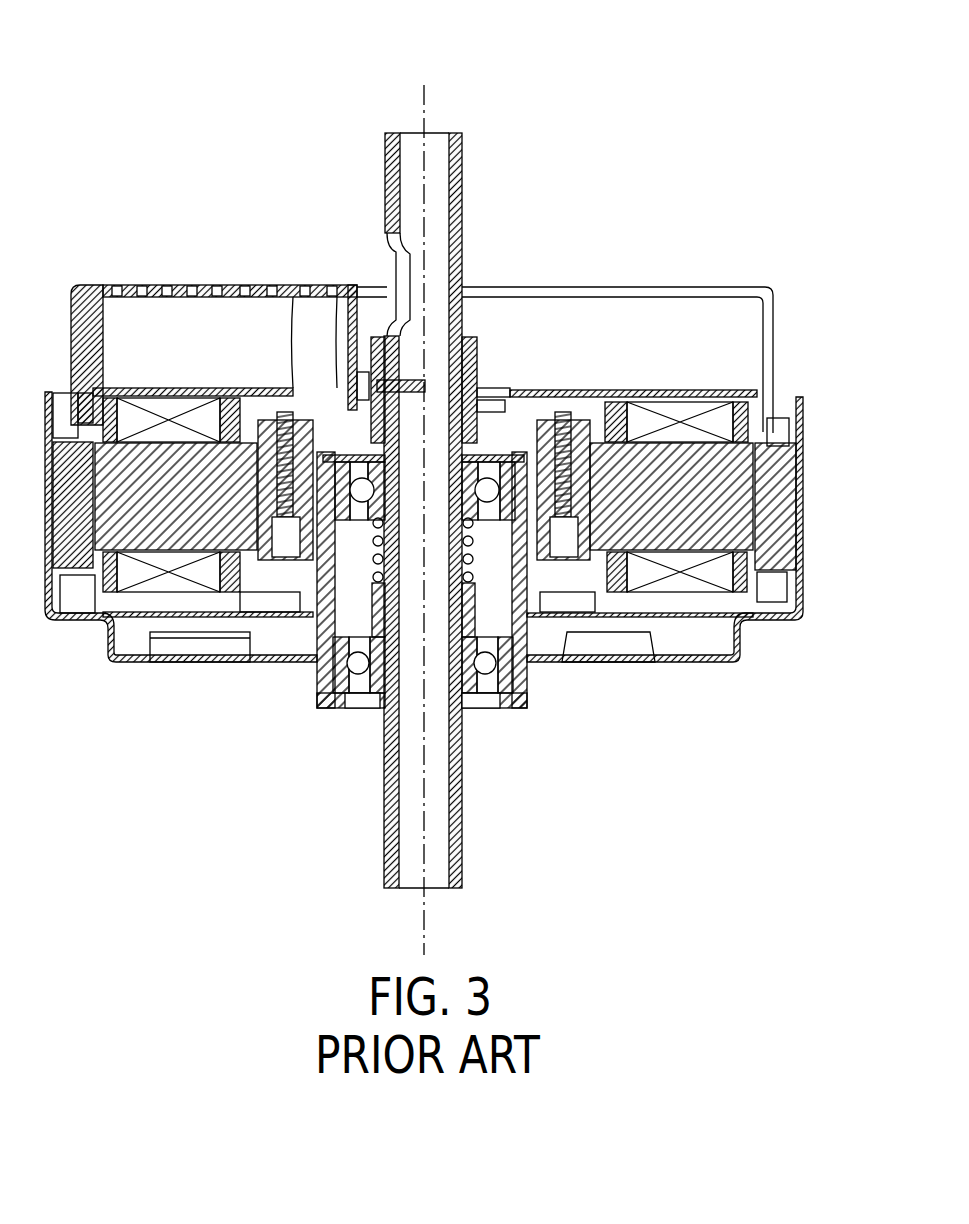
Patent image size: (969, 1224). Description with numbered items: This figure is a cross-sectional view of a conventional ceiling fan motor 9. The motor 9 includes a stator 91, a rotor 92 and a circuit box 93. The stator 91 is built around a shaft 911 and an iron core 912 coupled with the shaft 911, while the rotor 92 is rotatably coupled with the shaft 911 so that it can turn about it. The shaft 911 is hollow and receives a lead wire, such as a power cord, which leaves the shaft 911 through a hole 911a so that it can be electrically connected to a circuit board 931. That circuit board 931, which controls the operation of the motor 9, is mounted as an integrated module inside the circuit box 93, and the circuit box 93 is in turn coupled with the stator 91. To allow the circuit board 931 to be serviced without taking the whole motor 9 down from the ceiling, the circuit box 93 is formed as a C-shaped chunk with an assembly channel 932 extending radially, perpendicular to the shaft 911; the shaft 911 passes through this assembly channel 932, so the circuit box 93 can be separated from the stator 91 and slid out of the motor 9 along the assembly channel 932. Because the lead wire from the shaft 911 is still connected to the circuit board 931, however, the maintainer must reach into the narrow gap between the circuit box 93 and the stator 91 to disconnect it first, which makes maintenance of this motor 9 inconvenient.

The ceiling fan motor 9 is at (566, 85).
The stator 91 is at (642, 772).
The shaft 911 is at (460, 758).
The hole 911a is at (395, 252).
The iron core 912 is at (646, 528).
The rotor 92 is at (707, 662).
The circuit box 93 is at (83, 285).
The circuit board 931 is at (181, 388).
The assembly channel 932 is at (600, 325).